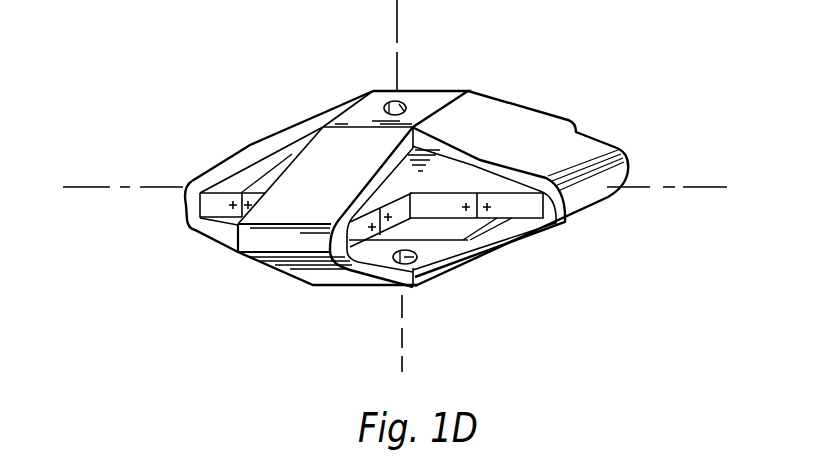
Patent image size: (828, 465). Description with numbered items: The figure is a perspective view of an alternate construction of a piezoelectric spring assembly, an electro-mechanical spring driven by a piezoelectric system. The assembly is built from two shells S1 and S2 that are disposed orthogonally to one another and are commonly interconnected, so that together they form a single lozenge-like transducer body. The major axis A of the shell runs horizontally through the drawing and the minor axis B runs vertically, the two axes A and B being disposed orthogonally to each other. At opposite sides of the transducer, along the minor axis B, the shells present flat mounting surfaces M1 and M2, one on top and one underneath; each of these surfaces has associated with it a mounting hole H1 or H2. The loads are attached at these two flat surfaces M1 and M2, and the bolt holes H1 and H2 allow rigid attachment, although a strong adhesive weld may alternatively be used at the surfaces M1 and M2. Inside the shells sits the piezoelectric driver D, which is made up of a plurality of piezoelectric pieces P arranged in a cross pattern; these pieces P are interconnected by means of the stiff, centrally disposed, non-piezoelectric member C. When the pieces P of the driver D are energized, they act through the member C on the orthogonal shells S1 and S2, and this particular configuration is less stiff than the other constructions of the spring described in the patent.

The shell S1 is at (280, 126).
The shell S2 is at (266, 244).
The flat mounting surface M1 is at (382, 91).
The flat mounting surface M2 is at (431, 248).
The mounting hole H1 is at (400, 108).
The mounting hole H2 is at (418, 263).
The piezoelectric pieces P is at (217, 205).
The non-piezoelectric member C is at (425, 190).
The piezoelectric driver D is at (467, 177).
The major axis A is at (88, 187).
The minor axis B is at (397, 40).